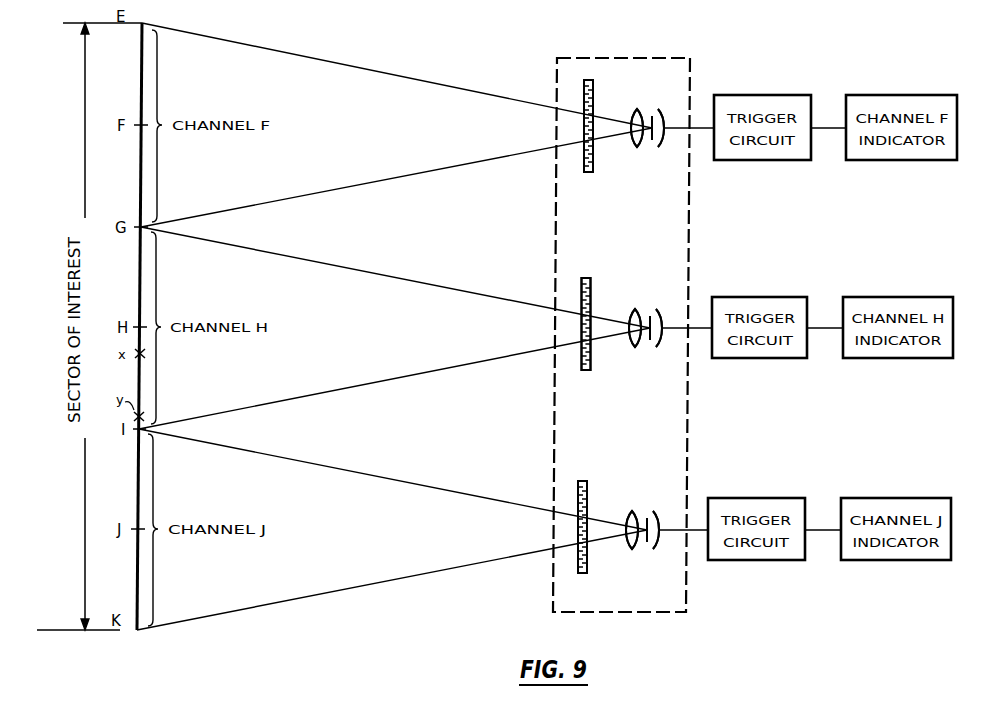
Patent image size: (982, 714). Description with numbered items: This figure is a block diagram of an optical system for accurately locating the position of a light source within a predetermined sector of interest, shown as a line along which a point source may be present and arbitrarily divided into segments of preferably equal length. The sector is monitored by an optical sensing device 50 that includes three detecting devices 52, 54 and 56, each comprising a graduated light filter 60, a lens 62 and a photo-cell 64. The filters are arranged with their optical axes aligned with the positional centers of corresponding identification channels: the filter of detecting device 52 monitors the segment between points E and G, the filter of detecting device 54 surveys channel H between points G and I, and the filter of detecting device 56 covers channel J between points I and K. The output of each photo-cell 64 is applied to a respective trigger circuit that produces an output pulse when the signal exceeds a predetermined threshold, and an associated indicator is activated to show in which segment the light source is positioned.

The optical sensing device 50 is at (557, 84).
The detecting device 52 is at (637, 100).
The detecting device 54 is at (632, 300).
The detecting device 56 is at (622, 502).
The graduated light filter 60 is at (594, 172).
The lens 62 is at (631, 148).
The photo-cell 64 is at (660, 148).